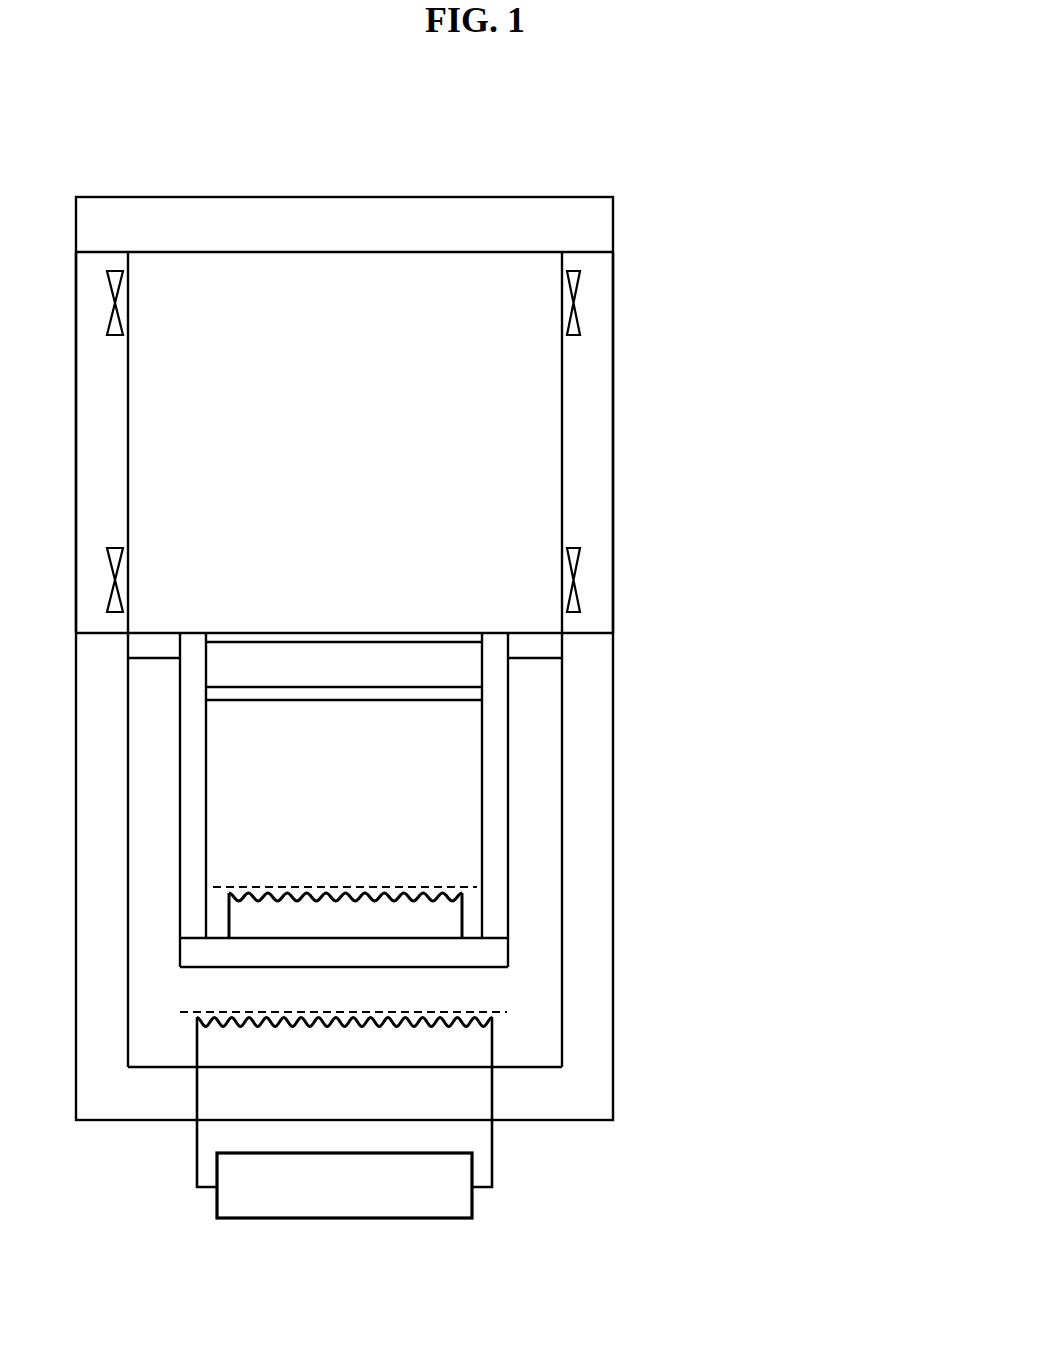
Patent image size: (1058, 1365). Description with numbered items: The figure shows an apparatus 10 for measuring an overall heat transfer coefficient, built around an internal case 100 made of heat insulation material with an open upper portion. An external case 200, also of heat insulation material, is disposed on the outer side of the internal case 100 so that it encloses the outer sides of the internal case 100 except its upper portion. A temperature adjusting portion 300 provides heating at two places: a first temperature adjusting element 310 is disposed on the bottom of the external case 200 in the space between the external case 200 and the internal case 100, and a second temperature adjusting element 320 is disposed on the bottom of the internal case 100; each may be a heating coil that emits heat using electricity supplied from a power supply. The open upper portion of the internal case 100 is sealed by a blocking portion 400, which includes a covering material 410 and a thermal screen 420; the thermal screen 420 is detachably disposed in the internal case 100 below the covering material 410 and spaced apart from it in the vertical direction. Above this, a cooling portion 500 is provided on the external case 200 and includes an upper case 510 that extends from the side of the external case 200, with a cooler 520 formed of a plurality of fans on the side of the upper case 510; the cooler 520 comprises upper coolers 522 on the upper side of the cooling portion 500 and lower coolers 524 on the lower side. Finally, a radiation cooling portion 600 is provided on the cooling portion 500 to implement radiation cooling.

The apparatus for measuring an overall heat transfer coefficient 10 is at (378, 134).
The internal case 100 is at (509, 798).
The external case 200 is at (613, 868).
The temperature adjusting portion 300 is at (497, 1055).
The first temperature adjusting element 310 is at (494, 1042).
The second temperature adjusting element 320 is at (462, 918).
The blocking portion 400 is at (505, 616).
The covering material 410 is at (414, 633).
The thermal screen 420 is at (430, 686).
The cooling portion 500 is at (478, 442).
The upper case 510 is at (613, 468).
The cooler 520 is at (456, 441).
The upper coolers 522 is at (575, 300).
The lower coolers 524 is at (577, 580).
The radiation cooling portion 600 is at (502, 197).